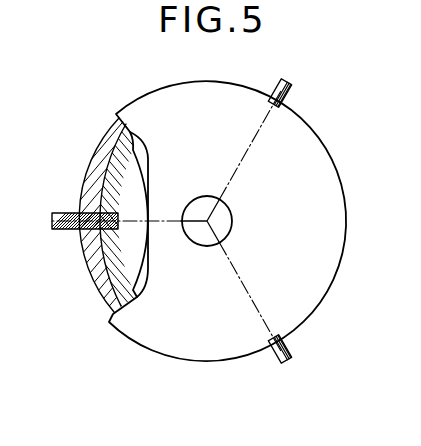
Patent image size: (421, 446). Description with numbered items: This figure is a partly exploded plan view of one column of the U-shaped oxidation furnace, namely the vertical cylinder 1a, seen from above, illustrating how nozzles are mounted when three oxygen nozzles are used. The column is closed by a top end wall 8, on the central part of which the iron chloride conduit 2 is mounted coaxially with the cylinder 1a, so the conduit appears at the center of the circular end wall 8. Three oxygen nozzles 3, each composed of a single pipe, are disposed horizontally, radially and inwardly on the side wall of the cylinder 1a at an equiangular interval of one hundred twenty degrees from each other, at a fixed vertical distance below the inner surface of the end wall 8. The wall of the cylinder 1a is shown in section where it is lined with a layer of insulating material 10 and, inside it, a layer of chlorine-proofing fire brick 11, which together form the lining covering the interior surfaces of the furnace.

The vertical cylinder 1a is at (180, 217).
The iron chloride conduit 2 is at (232, 235).
The oxygen nozzles 3 is at (52, 221).
The top end wall 8 is at (336, 227).
The layer of insulating material 10 is at (98, 166).
The layer of chlorine-proofing fire brick 11 is at (107, 190).